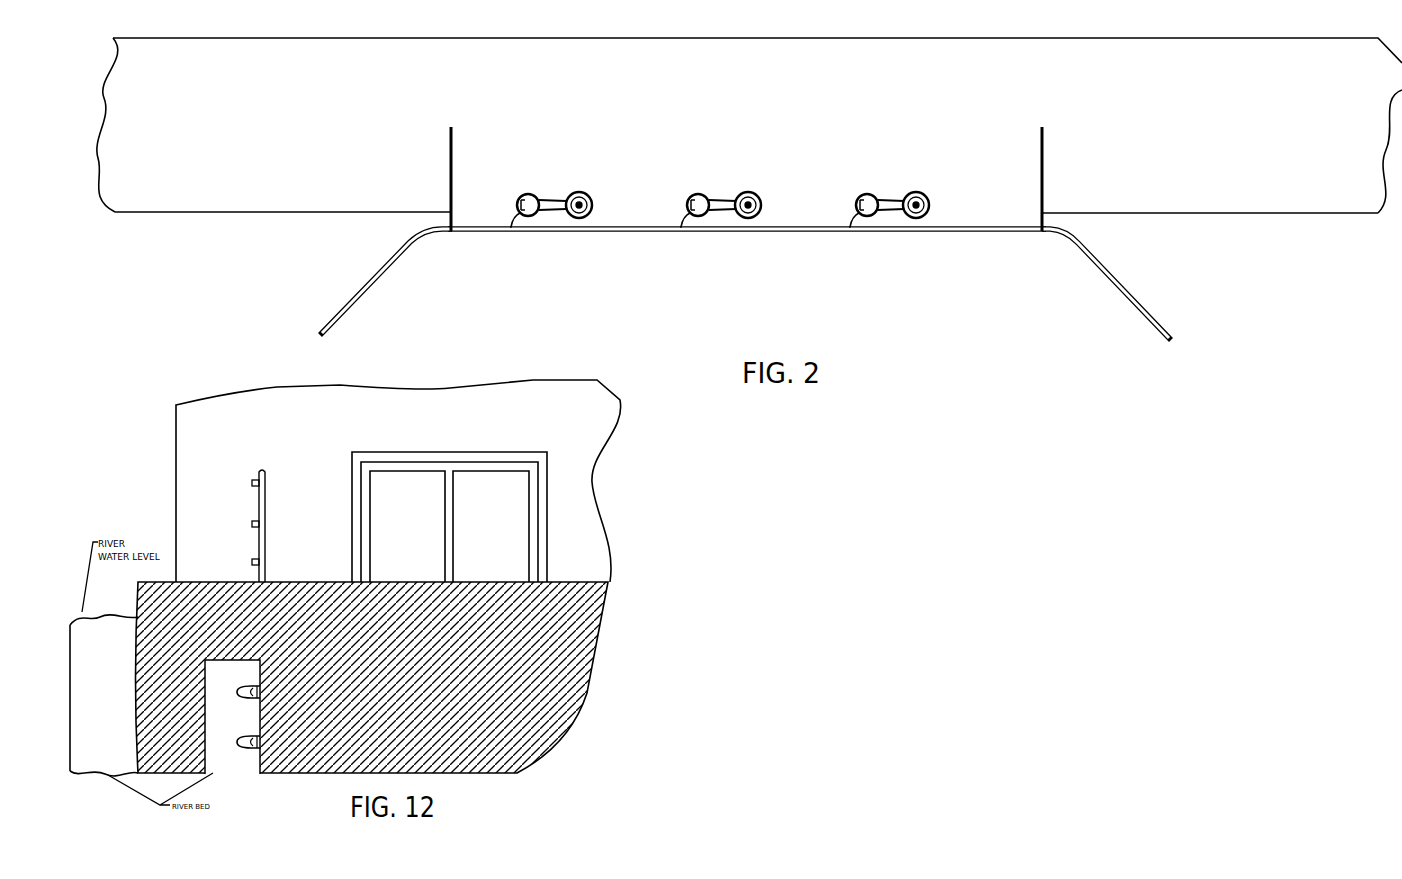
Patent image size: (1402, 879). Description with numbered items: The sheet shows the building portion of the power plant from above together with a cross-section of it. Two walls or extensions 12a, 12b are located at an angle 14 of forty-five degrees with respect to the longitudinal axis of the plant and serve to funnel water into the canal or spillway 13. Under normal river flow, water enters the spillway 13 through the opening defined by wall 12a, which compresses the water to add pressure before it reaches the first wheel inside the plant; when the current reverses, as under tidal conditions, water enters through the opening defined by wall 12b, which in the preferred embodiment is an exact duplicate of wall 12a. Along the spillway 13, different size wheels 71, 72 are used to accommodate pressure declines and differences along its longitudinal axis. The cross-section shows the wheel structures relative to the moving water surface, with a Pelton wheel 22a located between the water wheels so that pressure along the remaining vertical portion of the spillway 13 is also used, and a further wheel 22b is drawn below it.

In FIG. 2, the wall or extension 12a is at (332, 316).
In FIG. 2, the wall or extension 12b is at (1162, 316).
In FIG. 2, the canal or spillway 13 is at (380, 242).
In FIG. 12, the canal or spillway 13 is at (218, 754).
In FIG. 2, the 45° angle 14 is at (1167, 213).
In FIG. 2, the wheel 71 is at (527, 194).
In FIG. 2, the wheel 72 is at (585, 193).
In FIG. 12, the Pelton wheel 22a is at (232, 688).
In FIG. 12, the lower guide bolt 22b is at (245, 748).